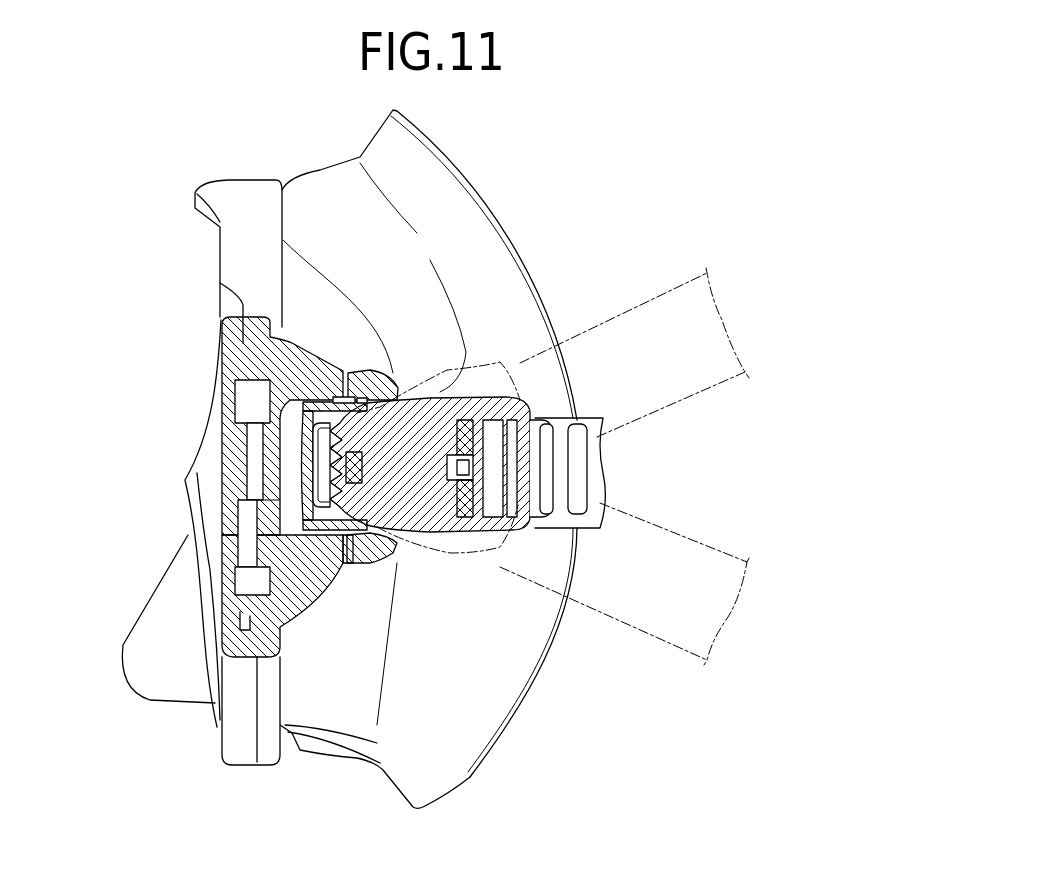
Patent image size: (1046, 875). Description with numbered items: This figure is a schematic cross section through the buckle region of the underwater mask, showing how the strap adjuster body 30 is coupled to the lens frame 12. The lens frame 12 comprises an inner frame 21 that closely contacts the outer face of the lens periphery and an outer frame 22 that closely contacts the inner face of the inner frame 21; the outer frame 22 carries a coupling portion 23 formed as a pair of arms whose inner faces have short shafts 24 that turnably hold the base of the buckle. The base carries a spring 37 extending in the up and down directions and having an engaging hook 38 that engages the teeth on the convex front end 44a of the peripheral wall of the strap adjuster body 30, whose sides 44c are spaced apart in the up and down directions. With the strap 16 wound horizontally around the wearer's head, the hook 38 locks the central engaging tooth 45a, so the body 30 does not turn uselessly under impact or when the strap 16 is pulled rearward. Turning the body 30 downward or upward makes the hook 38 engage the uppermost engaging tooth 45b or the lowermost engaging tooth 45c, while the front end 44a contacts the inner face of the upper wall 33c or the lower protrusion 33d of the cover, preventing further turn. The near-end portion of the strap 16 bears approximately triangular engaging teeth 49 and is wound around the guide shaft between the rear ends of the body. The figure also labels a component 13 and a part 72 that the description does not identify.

The lens frame 12 is at (237, 758).
The column cover housing 13 is at (333, 717).
The strap 16 is at (673, 313).
The inner frame 21 is at (230, 303).
The outer frame 22 is at (243, 247).
The coupling portions 23 is at (330, 380).
The short shafts 24 is at (267, 390).
The strap adjuster body 30 is at (488, 343).
The upper and lower walls 33c is at (397, 390).
The upper and lower protrusions 33d is at (378, 553).
The spring 37 is at (330, 457).
The first engaging hook 38 is at (365, 402).
The front end 44a is at (345, 470).
The sides 44c is at (437, 393).
The central engaging tooth 45a is at (301, 498).
The uppermost engaging tooth 45b is at (358, 402).
The lowermost engaging tooth 45c is at (348, 563).
The engaging teeth 49 is at (573, 478).
The resin ring 72 is at (316, 440).